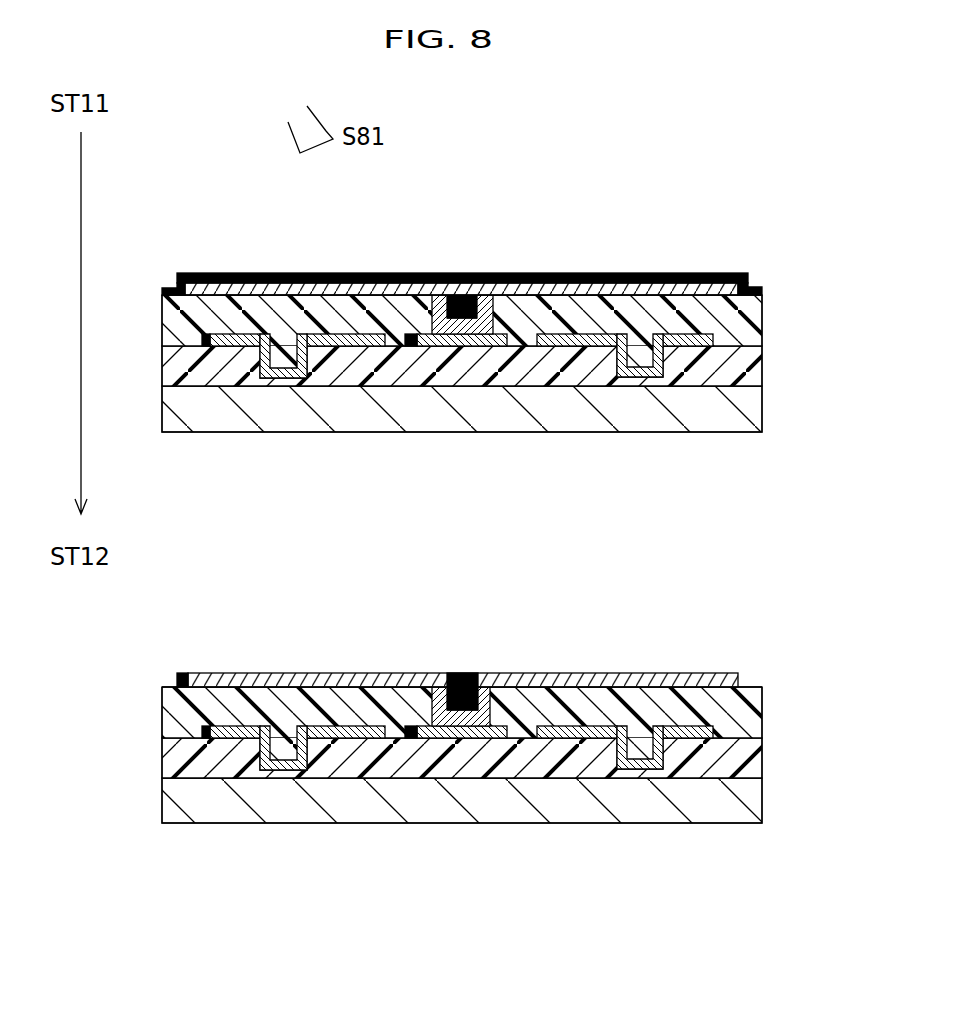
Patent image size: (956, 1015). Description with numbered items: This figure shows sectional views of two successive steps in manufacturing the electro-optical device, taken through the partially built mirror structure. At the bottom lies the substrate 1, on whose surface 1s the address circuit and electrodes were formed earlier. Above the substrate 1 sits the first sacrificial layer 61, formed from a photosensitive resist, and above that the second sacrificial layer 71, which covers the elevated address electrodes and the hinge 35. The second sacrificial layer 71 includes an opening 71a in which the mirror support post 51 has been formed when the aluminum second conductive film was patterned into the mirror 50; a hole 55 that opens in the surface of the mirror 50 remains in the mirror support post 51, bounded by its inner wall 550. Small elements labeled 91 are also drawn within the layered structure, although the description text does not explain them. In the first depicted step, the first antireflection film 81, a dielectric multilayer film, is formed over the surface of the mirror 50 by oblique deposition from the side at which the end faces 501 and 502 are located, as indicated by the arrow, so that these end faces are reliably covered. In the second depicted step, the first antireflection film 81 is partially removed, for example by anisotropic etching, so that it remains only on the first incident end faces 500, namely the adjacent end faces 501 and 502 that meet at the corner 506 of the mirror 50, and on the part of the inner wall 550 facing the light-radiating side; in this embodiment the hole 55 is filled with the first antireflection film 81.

The substrate 1 is at (753, 413).
The surface of the substrate 1s is at (707, 387).
The hinge 35 is at (440, 344).
The mirror 50 is at (592, 290).
The mirror support post 51 is at (476, 289).
The hole 55 is at (462, 325).
The first sacrificial layer 61 is at (748, 372).
The second sacrificial layer 71 is at (748, 318).
The opening 71a is at (492, 317).
The first antireflection film 81 is at (673, 274).
The wiring electrode 91 is at (207, 338).
The first incident end faces 500 is at (435, 427).
The end face 501 is at (435, 427).
The end face 502 is at (435, 427).
The corner of the mirror 506 is at (435, 427).
The inner wall of the hole 550 is at (488, 681).